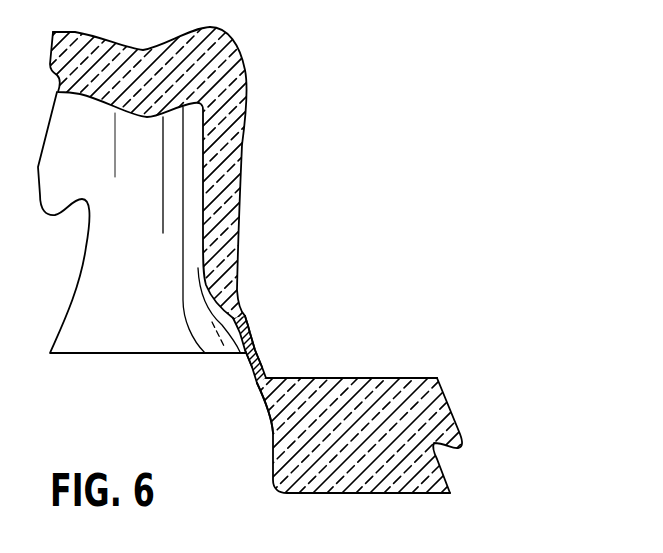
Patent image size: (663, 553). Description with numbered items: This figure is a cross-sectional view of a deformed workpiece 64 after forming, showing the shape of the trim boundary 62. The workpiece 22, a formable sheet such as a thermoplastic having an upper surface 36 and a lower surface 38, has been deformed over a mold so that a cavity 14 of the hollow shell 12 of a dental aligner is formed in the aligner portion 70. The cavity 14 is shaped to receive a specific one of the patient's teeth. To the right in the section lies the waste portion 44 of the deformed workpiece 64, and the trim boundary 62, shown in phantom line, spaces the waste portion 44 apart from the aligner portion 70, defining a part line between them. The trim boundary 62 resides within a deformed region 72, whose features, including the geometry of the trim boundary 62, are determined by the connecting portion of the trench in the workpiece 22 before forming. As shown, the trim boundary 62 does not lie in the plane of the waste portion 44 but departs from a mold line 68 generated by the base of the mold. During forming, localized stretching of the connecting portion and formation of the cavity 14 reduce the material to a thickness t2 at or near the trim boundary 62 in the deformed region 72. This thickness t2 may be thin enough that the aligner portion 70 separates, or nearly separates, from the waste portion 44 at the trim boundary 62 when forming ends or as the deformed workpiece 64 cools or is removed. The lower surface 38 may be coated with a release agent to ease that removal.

The hollow shell 12 is at (247, 95).
The cavity 14 is at (243, 143).
The workpiece 22 is at (397, 378).
The upper surface 36 is at (368, 378).
The lower surface 38 is at (410, 495).
The waste portion 44 is at (417, 378).
The trim boundary 62 is at (242, 315).
The deformed workpiece 64 is at (407, 150).
The mold line 68 is at (277, 372).
The aligner portion 70 is at (143, 49).
The deformed region 72 is at (269, 281).
The thickness t2 is at (250, 355).